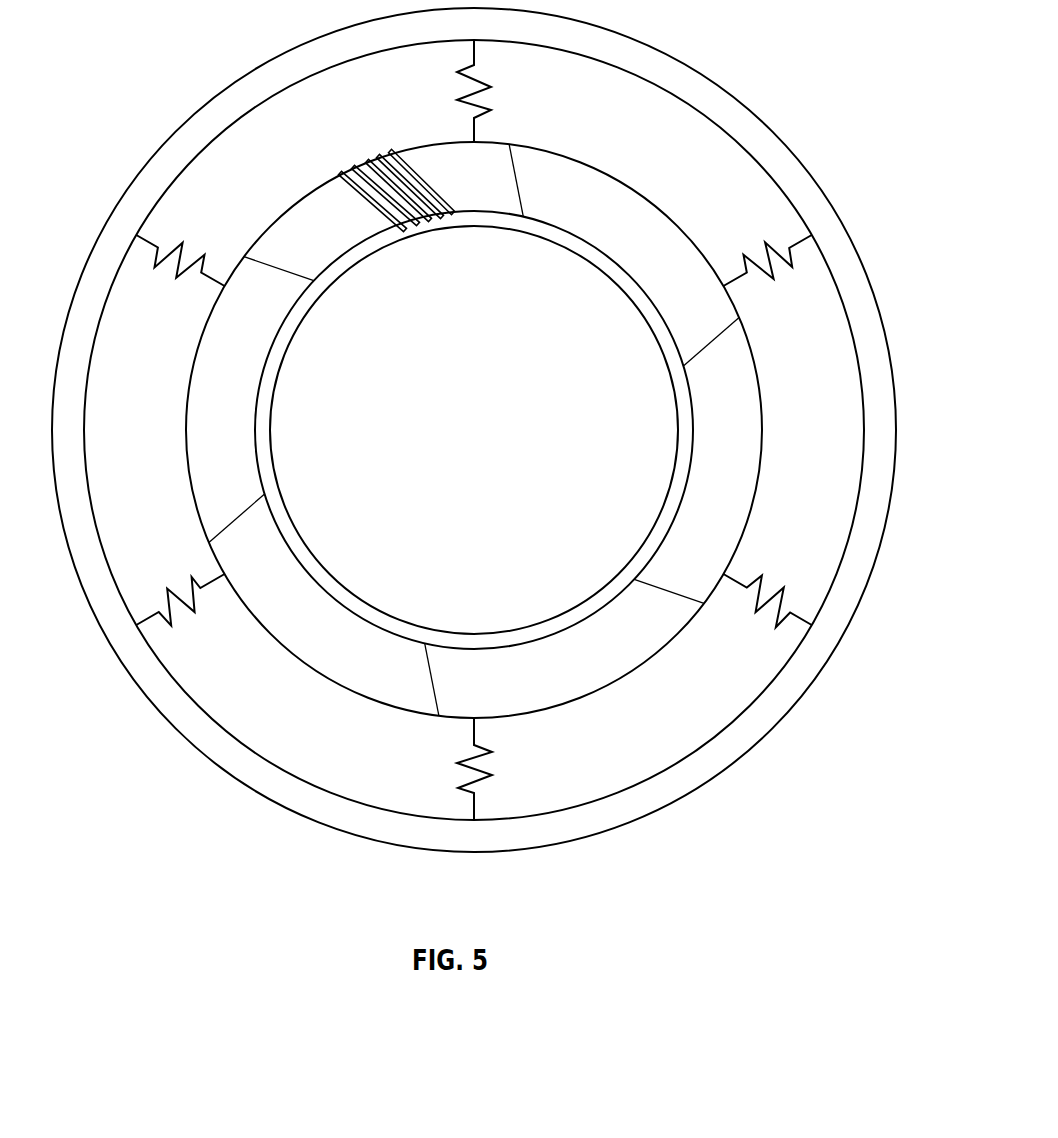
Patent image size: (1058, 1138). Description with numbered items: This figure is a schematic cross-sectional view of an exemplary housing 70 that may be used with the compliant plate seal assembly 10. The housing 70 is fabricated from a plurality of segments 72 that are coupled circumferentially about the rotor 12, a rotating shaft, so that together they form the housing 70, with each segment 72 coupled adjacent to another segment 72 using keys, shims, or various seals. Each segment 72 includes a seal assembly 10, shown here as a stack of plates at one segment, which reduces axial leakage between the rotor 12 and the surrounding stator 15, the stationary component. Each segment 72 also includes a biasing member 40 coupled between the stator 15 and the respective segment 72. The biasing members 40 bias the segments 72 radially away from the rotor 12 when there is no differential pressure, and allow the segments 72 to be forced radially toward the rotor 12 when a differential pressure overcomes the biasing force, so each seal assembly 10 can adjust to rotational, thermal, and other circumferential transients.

The compliant plate seal assembly 10 is at (349, 148).
The rotor 12 is at (489, 441).
The stator 15 is at (648, 805).
The biasing member 40 is at (473, 123).
The housing 70 is at (795, 410).
The segment 72 is at (190, 378).